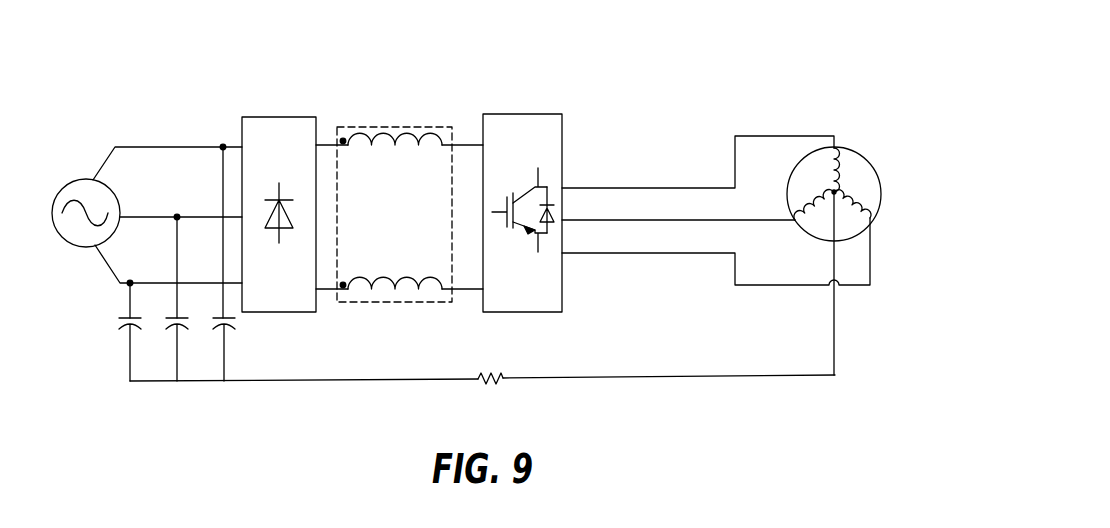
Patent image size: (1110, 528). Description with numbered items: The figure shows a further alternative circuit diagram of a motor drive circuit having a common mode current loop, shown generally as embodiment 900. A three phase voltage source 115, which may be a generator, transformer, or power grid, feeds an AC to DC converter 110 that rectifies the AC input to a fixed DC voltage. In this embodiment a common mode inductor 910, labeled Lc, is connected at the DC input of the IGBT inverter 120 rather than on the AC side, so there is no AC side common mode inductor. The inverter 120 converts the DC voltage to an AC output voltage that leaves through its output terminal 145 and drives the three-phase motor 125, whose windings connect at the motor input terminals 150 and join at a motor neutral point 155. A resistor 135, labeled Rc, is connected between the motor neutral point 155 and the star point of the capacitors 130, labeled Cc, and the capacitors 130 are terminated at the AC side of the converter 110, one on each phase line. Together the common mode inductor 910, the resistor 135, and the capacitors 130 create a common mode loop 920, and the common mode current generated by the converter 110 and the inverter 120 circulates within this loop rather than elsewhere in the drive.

The embodiment 900 is at (820, 50).
The three phase voltage source 115 is at (79, 180).
The AC to DC converter 110 is at (282, 117).
The common mode inductor 910 is at (398, 126).
The inverter 120 is at (522, 114).
The output terminal 145 is at (567, 188).
The motor 125 is at (868, 160).
The motor input terminal 150 is at (837, 148).
The motor neutral point 155 is at (834, 192).
The capacitor 130 is at (103, 333).
The resistor 135 is at (503, 380).
The common mode loop 920 is at (672, 375).